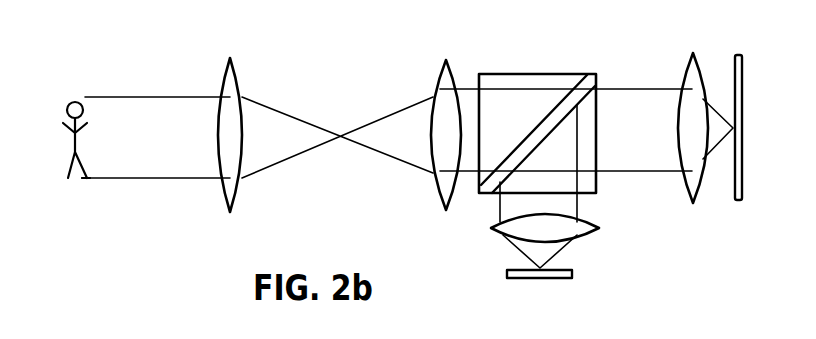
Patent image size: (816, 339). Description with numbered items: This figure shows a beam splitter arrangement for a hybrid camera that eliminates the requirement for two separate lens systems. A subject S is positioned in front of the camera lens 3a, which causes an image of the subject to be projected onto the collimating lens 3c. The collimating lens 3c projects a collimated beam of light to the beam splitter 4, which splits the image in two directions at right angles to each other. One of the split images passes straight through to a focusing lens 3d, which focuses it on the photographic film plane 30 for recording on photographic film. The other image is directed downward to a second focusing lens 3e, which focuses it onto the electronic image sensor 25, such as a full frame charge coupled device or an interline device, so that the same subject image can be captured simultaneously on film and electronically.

The subject S is at (70, 105).
The camera lens 3a is at (233, 65).
The collimating lens 3c is at (445, 62).
The focusing lens 3d is at (697, 55).
The focusing lens 3e is at (600, 230).
The beam splitter 4 is at (527, 80).
The photographic film plane 30 is at (743, 72).
The electronic image sensor 25 is at (565, 277).